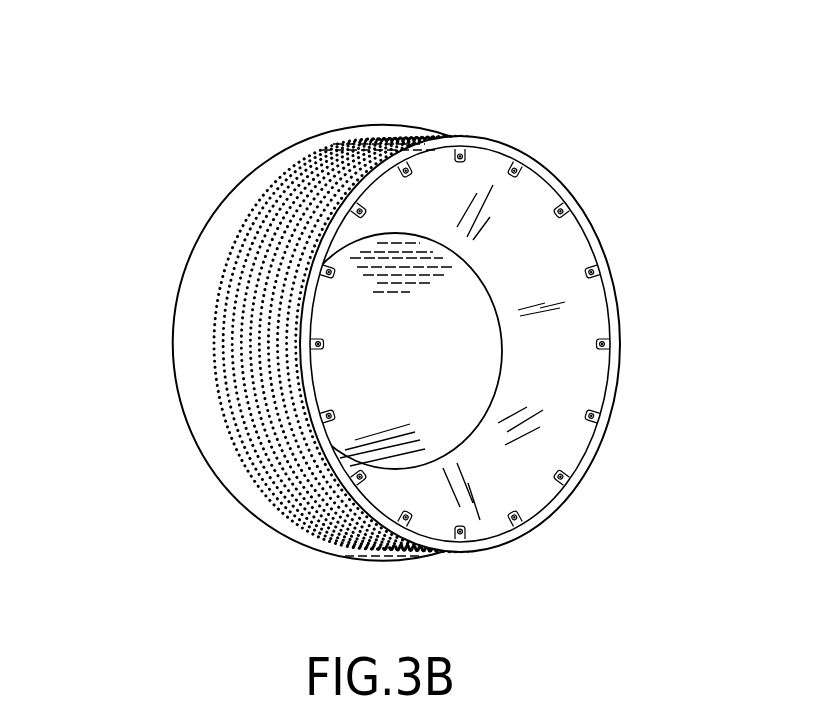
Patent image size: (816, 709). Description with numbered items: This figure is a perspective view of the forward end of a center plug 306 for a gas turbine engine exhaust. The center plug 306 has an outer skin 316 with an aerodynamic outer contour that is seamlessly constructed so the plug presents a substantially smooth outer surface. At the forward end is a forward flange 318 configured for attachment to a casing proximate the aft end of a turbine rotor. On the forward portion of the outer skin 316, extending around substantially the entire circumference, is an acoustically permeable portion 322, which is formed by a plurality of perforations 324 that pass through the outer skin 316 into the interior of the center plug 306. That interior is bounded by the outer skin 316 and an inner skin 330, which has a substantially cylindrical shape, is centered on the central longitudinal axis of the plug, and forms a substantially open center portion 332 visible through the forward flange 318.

The center plug 306 is at (176, 100).
The outer skin 316 is at (188, 424).
The forward flange 318 is at (614, 329).
The acoustically permeable portion 322 is at (252, 488).
The perforations 324 is at (303, 240).
The inner skin 330 is at (478, 383).
The open center portion 332 is at (380, 350).